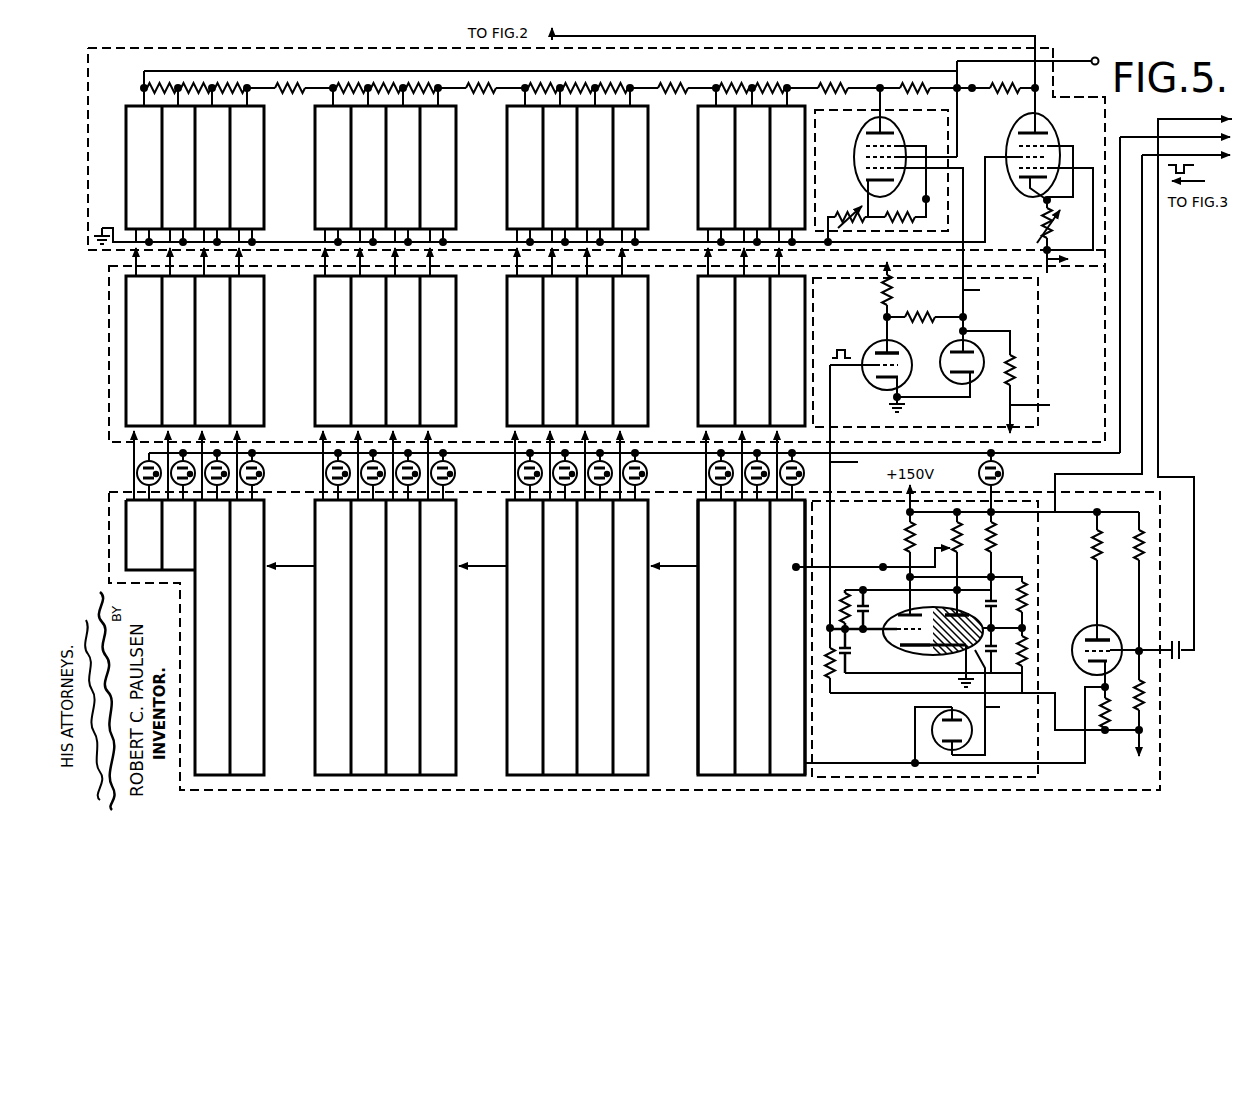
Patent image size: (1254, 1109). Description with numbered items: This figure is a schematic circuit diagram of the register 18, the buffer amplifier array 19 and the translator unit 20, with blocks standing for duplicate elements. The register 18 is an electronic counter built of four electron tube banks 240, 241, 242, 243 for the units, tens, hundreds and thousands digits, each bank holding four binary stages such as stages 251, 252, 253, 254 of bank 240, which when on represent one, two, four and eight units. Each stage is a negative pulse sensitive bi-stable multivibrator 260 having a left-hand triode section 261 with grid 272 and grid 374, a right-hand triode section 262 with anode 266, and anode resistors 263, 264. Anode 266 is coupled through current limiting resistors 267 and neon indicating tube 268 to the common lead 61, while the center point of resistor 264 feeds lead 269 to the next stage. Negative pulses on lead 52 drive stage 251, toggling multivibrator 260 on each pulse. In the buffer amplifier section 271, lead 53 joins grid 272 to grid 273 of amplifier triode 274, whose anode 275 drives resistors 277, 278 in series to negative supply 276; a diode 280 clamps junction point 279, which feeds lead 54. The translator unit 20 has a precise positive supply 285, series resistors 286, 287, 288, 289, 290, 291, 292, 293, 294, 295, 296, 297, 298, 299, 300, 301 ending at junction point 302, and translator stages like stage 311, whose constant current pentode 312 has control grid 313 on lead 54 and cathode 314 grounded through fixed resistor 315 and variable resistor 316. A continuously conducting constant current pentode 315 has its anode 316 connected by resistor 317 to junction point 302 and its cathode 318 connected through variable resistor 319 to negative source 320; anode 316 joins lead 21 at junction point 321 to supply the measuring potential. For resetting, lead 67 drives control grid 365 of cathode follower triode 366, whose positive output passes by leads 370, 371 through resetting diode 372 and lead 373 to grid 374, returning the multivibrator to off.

The register 18 is at (107, 533).
The buffer amplifier array 19 is at (107, 338).
The translator unit 20 is at (300, 47).
The lead 21 is at (1037, 47).
The lead 52 is at (1196, 161).
The lead 53 is at (858, 461).
The lead 54 is at (983, 290).
The lead 61 is at (1216, 143).
The lead 67 is at (1171, 383).
The electron tube bank 240 is at (860, 781).
The electron tube bank 241 is at (505, 636).
The electron tube bank 242 is at (312, 636).
The electron tube bank 243 is at (123, 512).
The binary stage 251 is at (874, 510).
The binary stage 252 is at (778, 521).
The binary stage 253 is at (743, 521).
The binary stage 254 is at (707, 521).
The multivibrator 260 is at (922, 659).
The left-hand triode section 261 is at (899, 648).
The right-hand triode section 262 is at (986, 702).
The left-hand resistor 263 is at (914, 540).
The right-hand resistor 264 is at (970, 528).
The anode 266 is at (970, 601).
The current limiting resistors 267 is at (996, 554).
The neon indicating tube 268 is at (1004, 470).
The lead 269 is at (876, 567).
The buffer amplifier section 271 is at (1040, 323).
The grid 272 is at (877, 609).
The grid 273 is at (870, 364).
The triode 274 is at (908, 351).
The anode 275 is at (884, 351).
The negative potential supply 276 is at (1047, 404).
The resistor 277 is at (912, 315).
The resistor 278 is at (1017, 400).
The junction point 279 is at (978, 332).
The diode 280 is at (940, 364).
The supply 285 is at (1087, 57).
The resistor 286 is at (921, 108).
The resistor 287 is at (830, 84).
The resistor 288 is at (770, 84).
The resistor 289 is at (734, 84).
The resistor 290 is at (672, 92).
The resistor 291 is at (613, 84).
The resistor 292 is at (578, 84).
The resistor 293 is at (543, 84).
The resistor 294 is at (481, 92).
The resistor 295 is at (421, 84).
The resistor 296 is at (387, 84).
The resistor 297 is at (352, 84).
The resistor 298 is at (289, 92).
The resistor 299 is at (232, 84).
The resistor 300 is at (196, 84).
The resistor 301 is at (158, 84).
The junction point 302 is at (973, 86).
The translator stage 311 is at (862, 108).
The pentode 312 is at (858, 140).
The control grid 313 is at (866, 157).
The cathode 314 is at (866, 180).
The pentode 315 is at (1076, 120).
The anode 316 is at (1018, 146).
The resistor 317 is at (1002, 99).
The cathode 318 is at (1030, 208).
The variable resistor 319 is at (1056, 226).
The source of negative potential 320 is at (1079, 274).
The junction point 321 is at (1053, 84).
The control grid 365 is at (1086, 638).
The triode 366 is at (1109, 633).
The lead 370 is at (1090, 752).
The lead 371 is at (915, 731).
The resetting diode 372 is at (972, 731).
The lead 373 is at (1006, 707).
The grid 374 is at (945, 616).